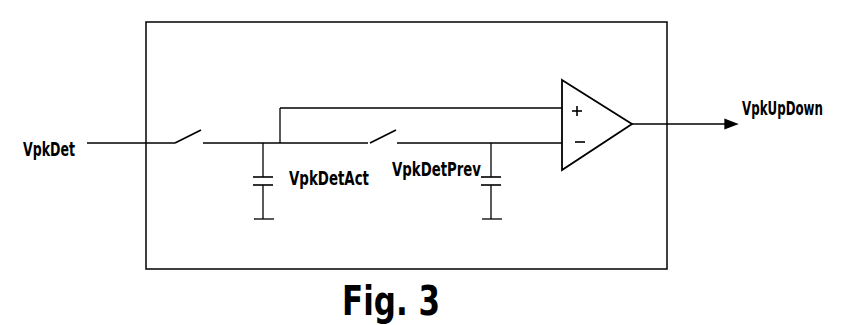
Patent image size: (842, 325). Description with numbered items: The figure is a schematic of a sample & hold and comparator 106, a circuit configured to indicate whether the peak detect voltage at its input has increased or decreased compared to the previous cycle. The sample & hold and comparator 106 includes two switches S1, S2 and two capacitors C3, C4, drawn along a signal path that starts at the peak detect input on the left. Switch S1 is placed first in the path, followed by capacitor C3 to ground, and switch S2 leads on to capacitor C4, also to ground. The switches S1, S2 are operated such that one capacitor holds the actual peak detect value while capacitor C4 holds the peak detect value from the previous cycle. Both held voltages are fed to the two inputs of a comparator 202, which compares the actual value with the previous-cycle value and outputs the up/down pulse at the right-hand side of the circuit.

The sample & hold and comparator 106 is at (202, 263).
The comparator 202 is at (568, 166).
The switch S1 is at (268, 121).
The switch S2 is at (466, 130).
The capacitor C3 is at (253, 181).
The capacitor C4 is at (503, 181).